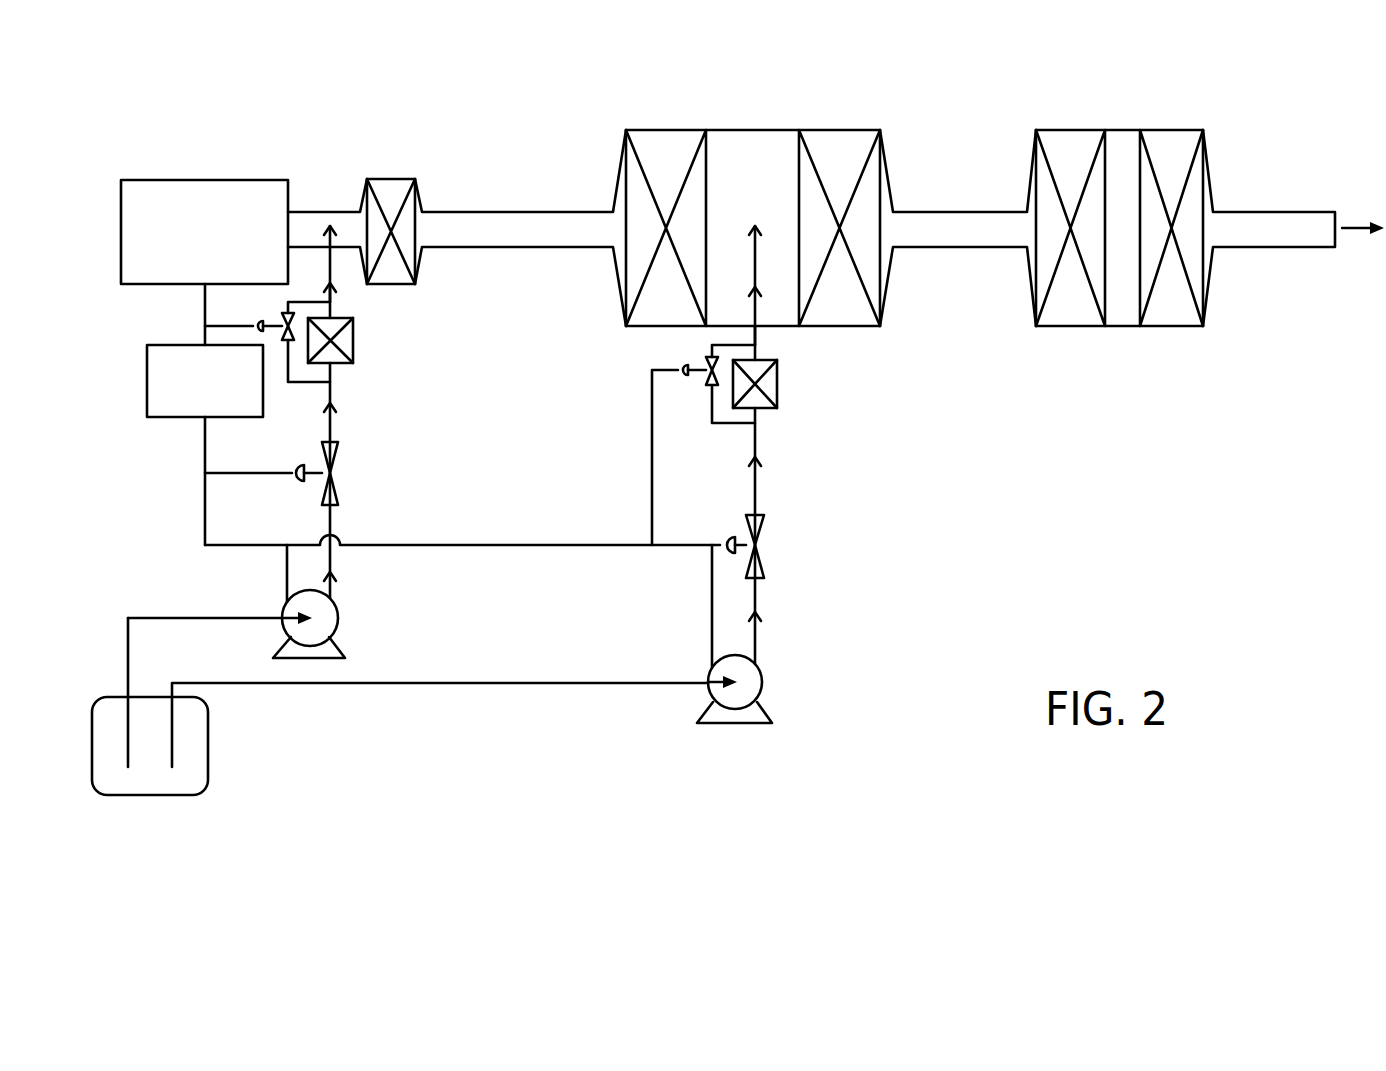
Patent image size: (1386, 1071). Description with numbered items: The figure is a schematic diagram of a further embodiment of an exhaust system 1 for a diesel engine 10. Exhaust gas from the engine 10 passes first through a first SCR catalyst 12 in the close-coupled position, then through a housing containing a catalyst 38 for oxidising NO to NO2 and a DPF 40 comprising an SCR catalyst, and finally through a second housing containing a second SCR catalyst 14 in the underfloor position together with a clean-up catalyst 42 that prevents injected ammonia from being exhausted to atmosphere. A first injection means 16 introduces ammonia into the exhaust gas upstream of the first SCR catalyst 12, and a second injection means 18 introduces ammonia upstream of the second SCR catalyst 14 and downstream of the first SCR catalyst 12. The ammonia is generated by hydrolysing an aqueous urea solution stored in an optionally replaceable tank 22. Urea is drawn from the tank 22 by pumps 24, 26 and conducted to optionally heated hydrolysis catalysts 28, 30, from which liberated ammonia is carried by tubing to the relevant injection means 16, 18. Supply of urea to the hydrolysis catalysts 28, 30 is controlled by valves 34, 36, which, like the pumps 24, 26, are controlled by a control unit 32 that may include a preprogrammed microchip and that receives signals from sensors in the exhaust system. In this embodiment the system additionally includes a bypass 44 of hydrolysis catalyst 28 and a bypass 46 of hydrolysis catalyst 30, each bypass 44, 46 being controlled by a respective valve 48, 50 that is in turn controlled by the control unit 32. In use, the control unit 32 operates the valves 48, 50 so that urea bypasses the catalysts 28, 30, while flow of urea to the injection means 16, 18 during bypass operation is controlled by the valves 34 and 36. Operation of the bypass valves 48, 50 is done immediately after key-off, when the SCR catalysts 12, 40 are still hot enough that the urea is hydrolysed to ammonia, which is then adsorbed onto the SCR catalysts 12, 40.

The exhaust system 1 is at (356, 104).
The diesel engine 10 is at (204, 232).
The first SCR catalyst 12 is at (394, 180).
The second SCR catalyst 14 is at (1072, 130).
The first injection means 16 is at (334, 228).
The second injection means 18 is at (757, 225).
The tank 22 is at (186, 795).
The pump 24 is at (339, 618).
The pump 26 is at (735, 723).
The hydrolysis catalyst 28 is at (355, 360).
The hydrolysis catalyst 30 is at (778, 386).
The control unit 32 is at (205, 414).
The valve 34 is at (340, 455).
The valve 36 is at (765, 540).
The catalyst for oxidising NO 38 is at (668, 130).
The DPF 40 is at (838, 130).
The clean-up catalyst 42 is at (1160, 130).
The bypass 44 is at (305, 383).
The bypass 46 is at (730, 423).
The valve 48 is at (284, 312).
The valve 50 is at (712, 381).